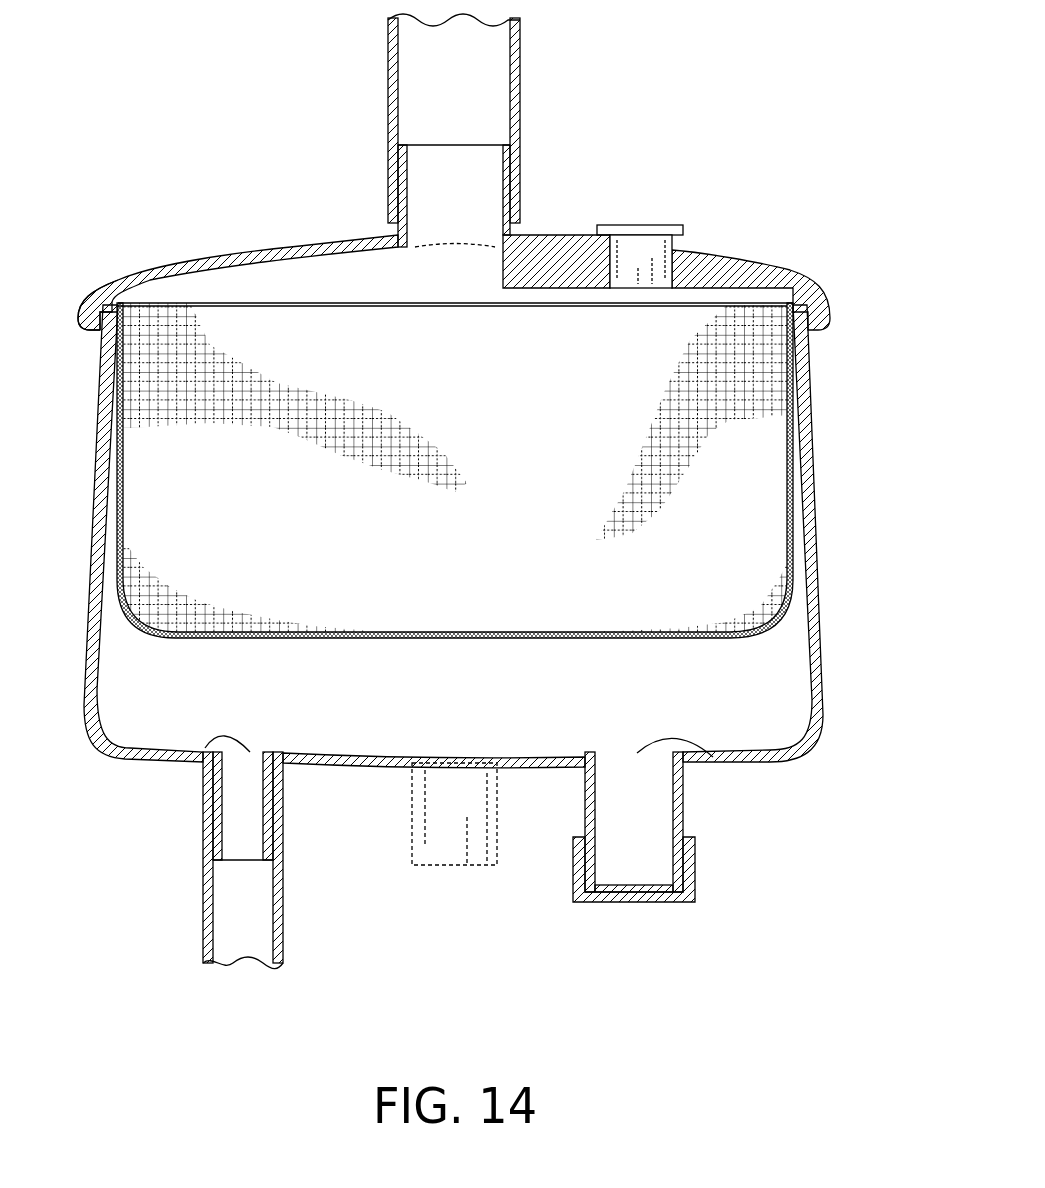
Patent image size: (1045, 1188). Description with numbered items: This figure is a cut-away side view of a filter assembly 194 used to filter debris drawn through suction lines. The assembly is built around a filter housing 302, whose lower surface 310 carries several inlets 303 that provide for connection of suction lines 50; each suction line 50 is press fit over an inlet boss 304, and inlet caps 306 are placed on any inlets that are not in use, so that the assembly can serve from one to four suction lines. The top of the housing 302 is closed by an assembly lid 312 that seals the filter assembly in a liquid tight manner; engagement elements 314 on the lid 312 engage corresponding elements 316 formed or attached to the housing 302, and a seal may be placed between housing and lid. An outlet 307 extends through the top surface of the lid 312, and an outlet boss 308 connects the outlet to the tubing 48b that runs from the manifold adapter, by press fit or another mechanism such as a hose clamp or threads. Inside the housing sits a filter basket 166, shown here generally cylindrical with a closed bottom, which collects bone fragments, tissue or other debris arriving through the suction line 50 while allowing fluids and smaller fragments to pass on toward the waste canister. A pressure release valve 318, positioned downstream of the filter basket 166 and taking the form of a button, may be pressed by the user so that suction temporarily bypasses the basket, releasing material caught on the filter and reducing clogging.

The tubing 48b is at (517, 58).
The outlet boss 308 is at (513, 163).
The outlet 307 is at (440, 235).
The assembly lid 312 is at (224, 256).
The pressure release valve 318 is at (655, 247).
The filter assembly 194 is at (826, 252).
The corresponding elements 316 is at (90, 298).
The engagement elements 314 is at (100, 330).
The filter housing 302 is at (820, 602).
The lower surface 310 is at (337, 762).
The filter basket 166 is at (757, 485).
The suction line 50 is at (206, 908).
The inlet boss 304 is at (212, 812).
The inlets 303 is at (225, 735).
The inlet caps 306 is at (630, 897).